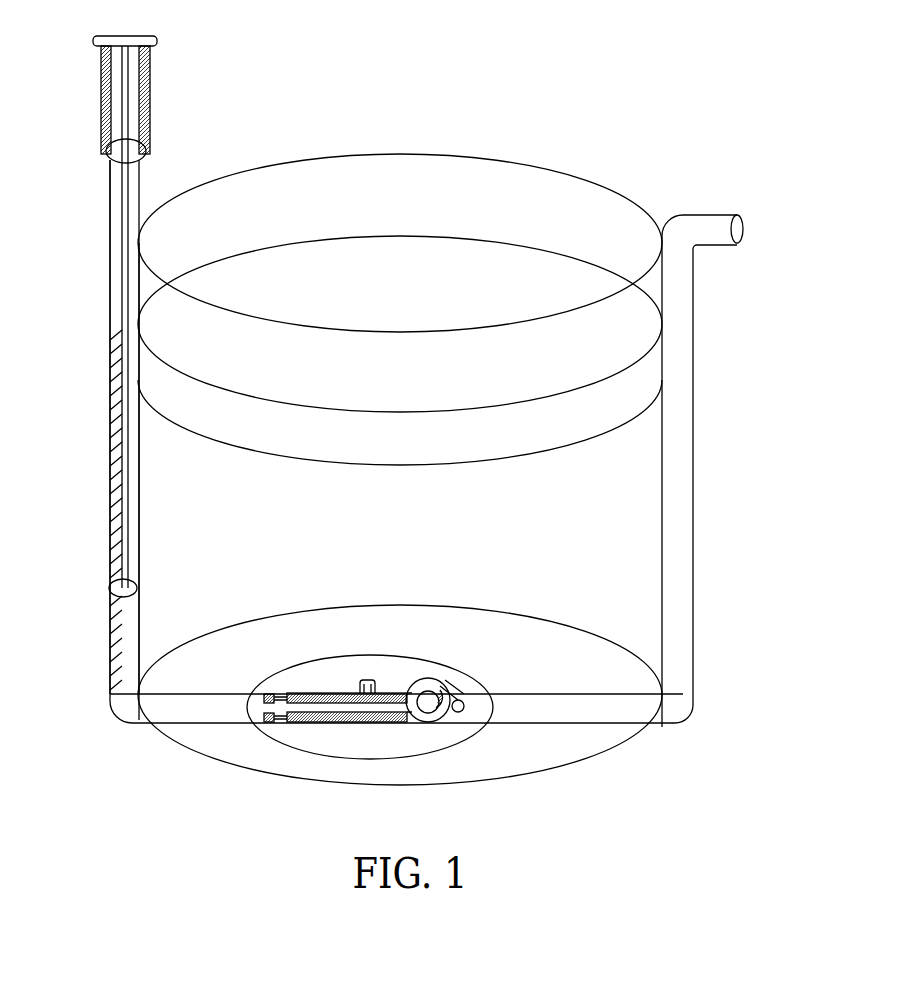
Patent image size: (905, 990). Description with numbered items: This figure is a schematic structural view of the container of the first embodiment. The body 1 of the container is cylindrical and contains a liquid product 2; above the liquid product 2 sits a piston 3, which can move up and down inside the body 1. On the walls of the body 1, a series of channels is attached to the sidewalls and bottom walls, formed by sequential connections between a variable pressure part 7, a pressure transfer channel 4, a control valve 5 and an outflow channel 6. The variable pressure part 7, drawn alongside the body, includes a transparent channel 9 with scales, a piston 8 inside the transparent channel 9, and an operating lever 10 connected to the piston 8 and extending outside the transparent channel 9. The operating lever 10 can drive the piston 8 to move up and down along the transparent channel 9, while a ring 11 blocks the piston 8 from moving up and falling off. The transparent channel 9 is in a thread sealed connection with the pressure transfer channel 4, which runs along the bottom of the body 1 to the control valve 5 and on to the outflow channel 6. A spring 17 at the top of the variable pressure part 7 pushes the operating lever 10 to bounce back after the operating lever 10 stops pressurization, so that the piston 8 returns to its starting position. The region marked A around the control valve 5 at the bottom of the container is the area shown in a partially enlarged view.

The body 1 is at (477, 205).
The liquid product 2 is at (595, 538).
The piston 3 is at (615, 410).
The pressure transfer channel 4 is at (180, 708).
The control valve 5 is at (362, 712).
The outflow channel 6 is at (678, 598).
The variable pressure part 7 is at (112, 283).
The piston 8 is at (135, 588).
The transparent channel 9 is at (110, 452).
The operating lever 10 is at (125, 212).
The ring 11 is at (110, 154).
The spring 17 is at (100, 80).
The partially enlarged region A is at (448, 745).